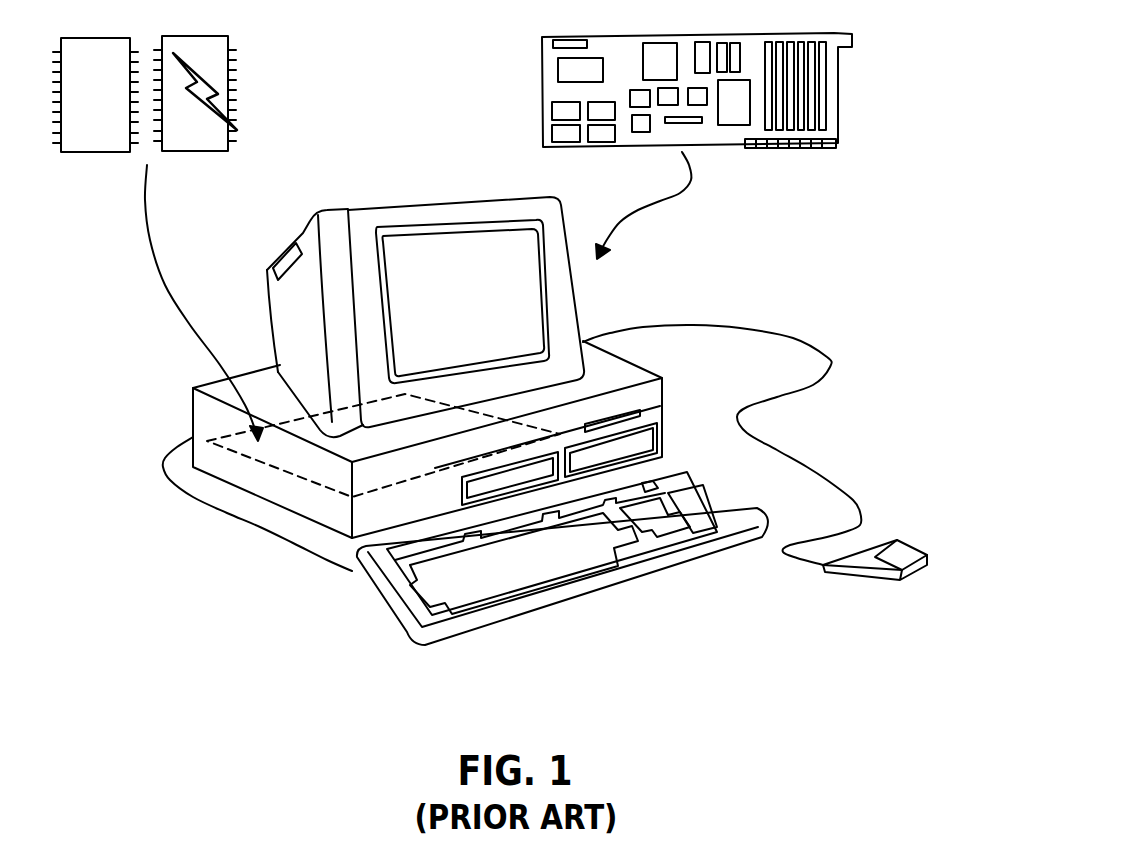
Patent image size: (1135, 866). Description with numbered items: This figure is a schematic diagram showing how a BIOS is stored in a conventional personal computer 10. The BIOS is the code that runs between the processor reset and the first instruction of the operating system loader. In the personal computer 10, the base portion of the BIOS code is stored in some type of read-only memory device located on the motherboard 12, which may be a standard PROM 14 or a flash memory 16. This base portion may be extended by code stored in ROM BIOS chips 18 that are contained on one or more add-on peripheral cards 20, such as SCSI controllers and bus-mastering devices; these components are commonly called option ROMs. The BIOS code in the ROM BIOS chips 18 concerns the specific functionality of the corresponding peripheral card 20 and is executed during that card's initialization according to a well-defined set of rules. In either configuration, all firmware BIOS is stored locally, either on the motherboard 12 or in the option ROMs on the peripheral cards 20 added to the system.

The personal computer 10 is at (571, 627).
The motherboard 12 is at (263, 457).
The PROM 14 is at (93, 135).
The flash memory 16 is at (193, 135).
The ROM BIOS chip 18 is at (563, 135).
The add-on peripheral card 20 is at (548, 78).